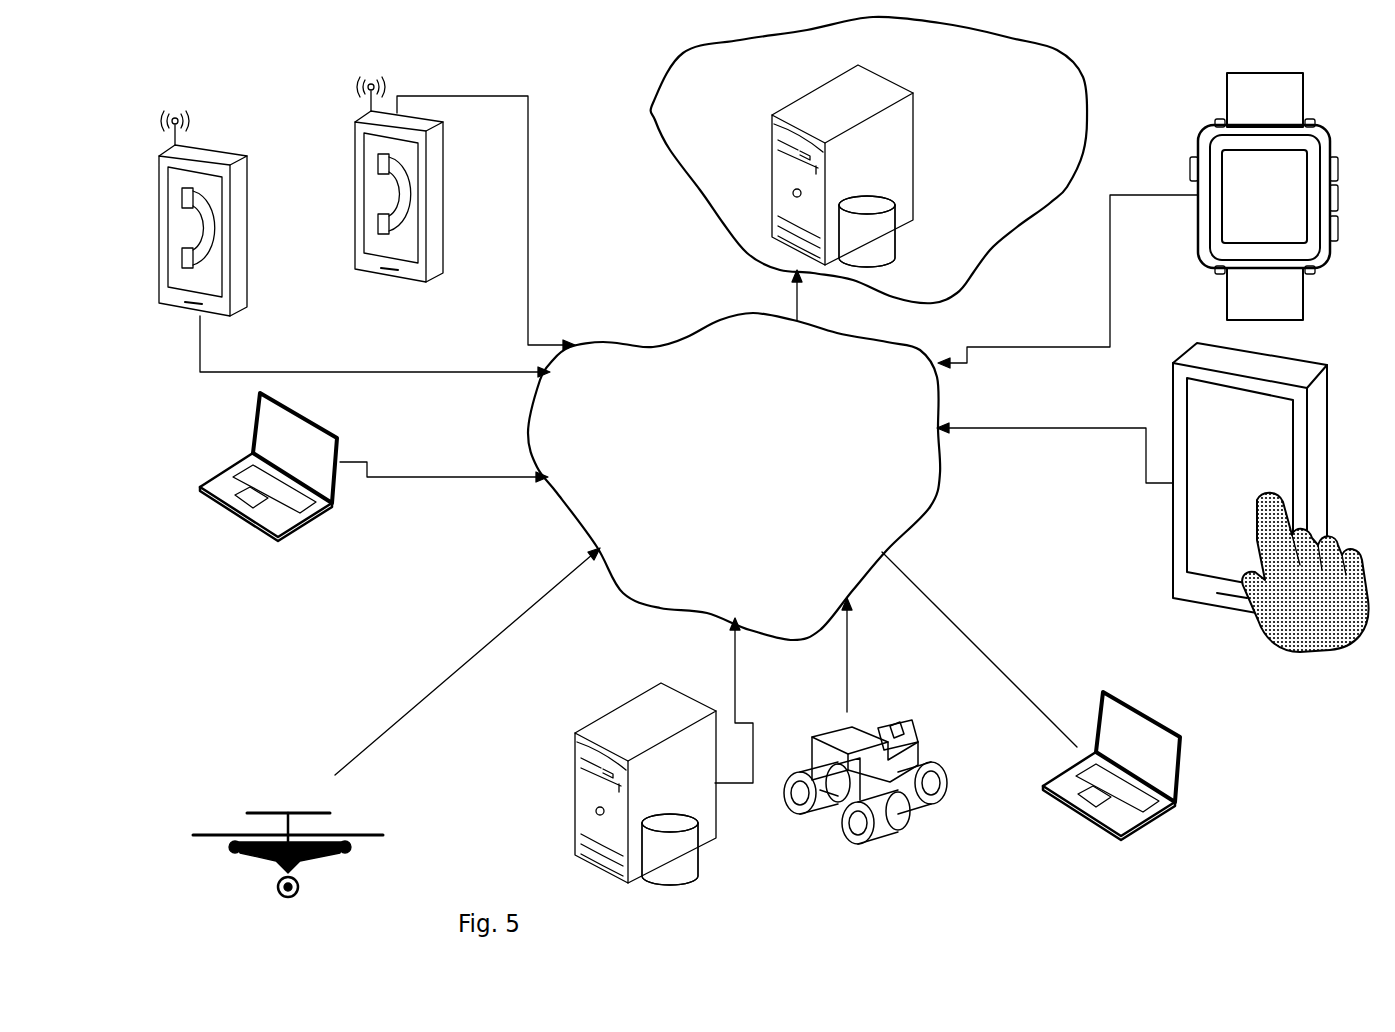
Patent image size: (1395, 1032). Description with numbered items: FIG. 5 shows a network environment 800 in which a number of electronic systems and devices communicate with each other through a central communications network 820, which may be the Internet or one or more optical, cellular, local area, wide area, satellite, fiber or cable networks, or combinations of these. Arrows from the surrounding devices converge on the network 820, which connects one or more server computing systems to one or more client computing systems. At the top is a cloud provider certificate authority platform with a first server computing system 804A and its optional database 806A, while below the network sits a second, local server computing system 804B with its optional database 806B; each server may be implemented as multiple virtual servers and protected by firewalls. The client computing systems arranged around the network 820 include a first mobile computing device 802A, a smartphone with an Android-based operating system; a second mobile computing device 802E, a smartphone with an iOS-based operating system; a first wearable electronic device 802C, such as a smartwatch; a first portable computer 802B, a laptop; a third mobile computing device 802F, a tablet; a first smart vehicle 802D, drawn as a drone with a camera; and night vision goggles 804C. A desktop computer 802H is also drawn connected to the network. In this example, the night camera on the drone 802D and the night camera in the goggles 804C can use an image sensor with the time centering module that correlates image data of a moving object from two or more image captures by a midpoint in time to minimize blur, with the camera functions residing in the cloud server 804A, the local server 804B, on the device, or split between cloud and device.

The network environment 800 is at (588, 110).
The first mobile computing device 802A is at (436, 194).
The first portable computer 802B is at (360, 467).
The first wearable electronic device 802C is at (1155, 203).
The first smart vehicle 802D is at (379, 722).
The second mobile computing device 802E is at (339, 228).
The third mobile computing device 802F is at (1153, 497).
The desktop computer 802H is at (1036, 696).
The first server computing system 804A is at (869, 168).
The second server computing system 804B is at (643, 751).
The goggles 804C is at (865, 758).
The database 806A is at (903, 231).
The database 806B is at (642, 865).
The communications network 820 is at (734, 476).